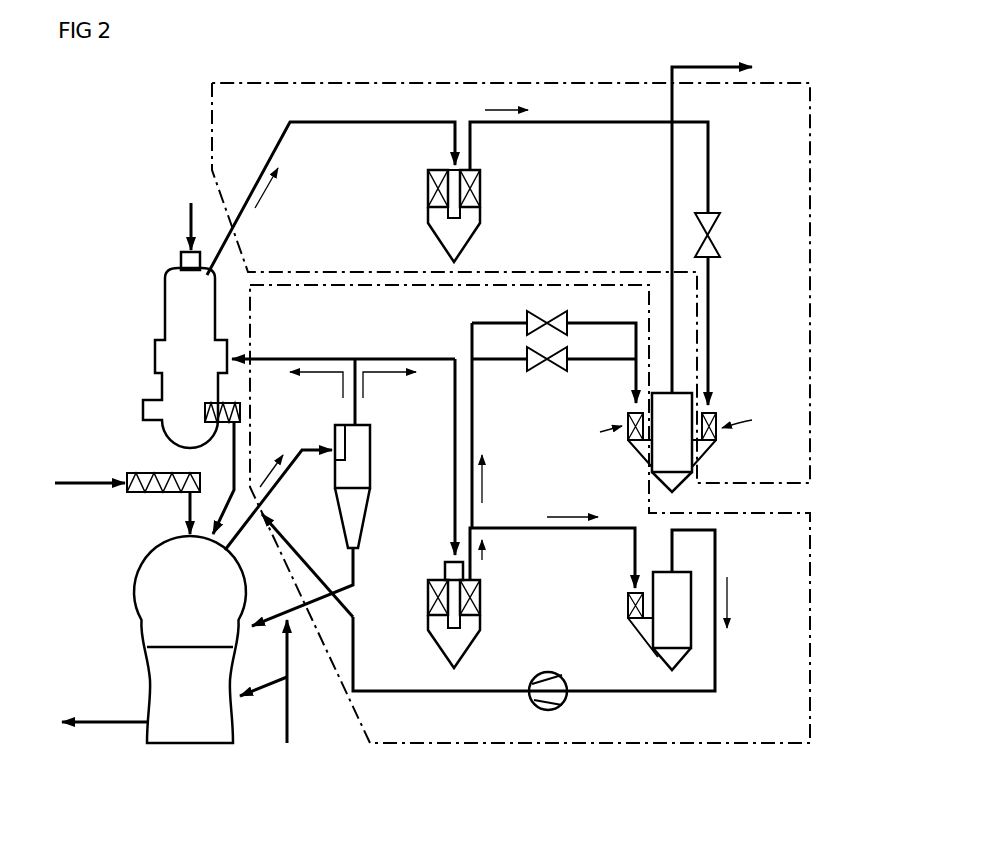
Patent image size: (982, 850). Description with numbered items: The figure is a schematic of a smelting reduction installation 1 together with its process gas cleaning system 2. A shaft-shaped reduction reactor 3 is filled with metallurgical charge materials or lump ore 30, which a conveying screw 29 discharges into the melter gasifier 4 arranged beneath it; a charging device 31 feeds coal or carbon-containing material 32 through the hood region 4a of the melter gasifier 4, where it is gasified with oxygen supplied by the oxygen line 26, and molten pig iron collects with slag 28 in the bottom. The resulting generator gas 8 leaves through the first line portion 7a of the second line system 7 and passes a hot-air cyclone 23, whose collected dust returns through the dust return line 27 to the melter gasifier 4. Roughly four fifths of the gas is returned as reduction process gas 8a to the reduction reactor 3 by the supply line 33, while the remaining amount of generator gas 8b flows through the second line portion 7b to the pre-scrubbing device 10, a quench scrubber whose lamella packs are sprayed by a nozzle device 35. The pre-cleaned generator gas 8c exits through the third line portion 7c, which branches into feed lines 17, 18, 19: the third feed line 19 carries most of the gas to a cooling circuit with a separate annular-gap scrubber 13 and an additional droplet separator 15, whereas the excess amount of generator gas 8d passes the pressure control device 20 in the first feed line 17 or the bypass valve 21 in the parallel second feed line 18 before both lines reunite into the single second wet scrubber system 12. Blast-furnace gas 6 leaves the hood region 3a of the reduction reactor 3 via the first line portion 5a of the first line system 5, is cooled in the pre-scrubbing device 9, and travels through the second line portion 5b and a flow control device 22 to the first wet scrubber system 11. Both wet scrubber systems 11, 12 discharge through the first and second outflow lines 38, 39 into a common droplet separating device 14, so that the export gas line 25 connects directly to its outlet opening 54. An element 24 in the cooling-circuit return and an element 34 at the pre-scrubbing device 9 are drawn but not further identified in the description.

The smelting reduction installation 1 is at (125, 222).
The process gas cleaning system 2 is at (620, 58).
The reduction reactor 3 is at (170, 322).
The hood region of the reduction reactor 3a is at (204, 278).
The melter gasifier 4 is at (138, 594).
The hood region of the melter gasifier 4a is at (186, 545).
The first line system 5 is at (365, 80).
The first line portion of the first line system 5a is at (275, 148).
The second line portion of the first line system 5b is at (575, 126).
The blast-furnace gas 6 is at (262, 198).
The second line system 7 is at (660, 746).
The first line portion of the second line system 7a is at (272, 480).
The second line portion of the second line system 7b is at (380, 355).
The third line portion of the second line system 7c is at (474, 437).
The generator gas 8 is at (258, 468).
The reduction process gas 8a is at (320, 375).
The amount of generator gas 8b is at (396, 375).
The pre-cooled and pre-cleaned generator gas 8c is at (485, 565).
The amount of generator gas (excess gas) 8d is at (484, 492).
The pre-scrubbing device 9 is at (440, 225).
The pre-scrubbing device 10 is at (440, 638).
The first wet scrubber system 11 is at (745, 419).
The second wet scrubber system 12 is at (600, 433).
The annular-gap scrubber 13 is at (620, 606).
The droplet separating device 14 is at (680, 486).
The additional droplet separator 15 is at (665, 655).
The first feed line 17 is at (500, 362).
The second feed line 18 is at (470, 323).
The third feed line 19 is at (540, 535).
The pressure control device 20 is at (543, 372).
The bypass valve 21 is at (578, 318).
The flow control device 22 is at (717, 240).
The hot-air cyclone 23 is at (372, 478).
The pump 24 is at (548, 672).
The export gas line 25 is at (702, 66).
The oxygen line 26 is at (315, 740).
The dust return line 27 is at (320, 615).
The slag 28 is at (110, 718).
The conveying screw 29 is at (212, 412).
The metallurgical charge materials 30 is at (228, 452).
The charging device 31 is at (140, 472).
The carbon-containing material 32 is at (72, 455).
The supply line 33 is at (292, 355).
The filter element 34 is at (475, 207).
The nozzle device 35 is at (438, 612).
The first outflow line 38 is at (710, 452).
The second outflow line 39 is at (640, 462).
The outlet opening 54 is at (680, 395).